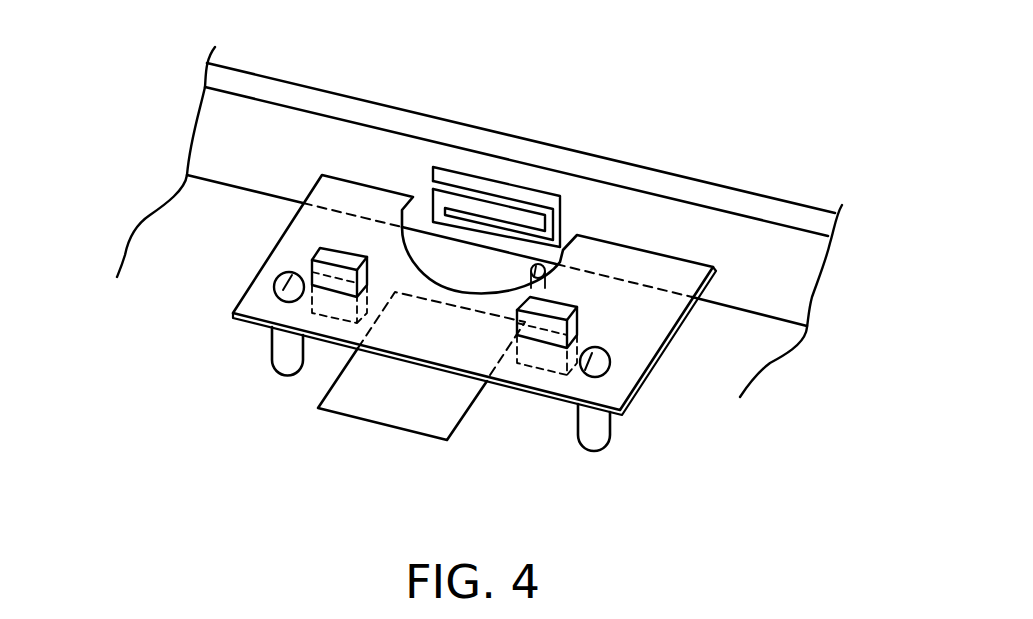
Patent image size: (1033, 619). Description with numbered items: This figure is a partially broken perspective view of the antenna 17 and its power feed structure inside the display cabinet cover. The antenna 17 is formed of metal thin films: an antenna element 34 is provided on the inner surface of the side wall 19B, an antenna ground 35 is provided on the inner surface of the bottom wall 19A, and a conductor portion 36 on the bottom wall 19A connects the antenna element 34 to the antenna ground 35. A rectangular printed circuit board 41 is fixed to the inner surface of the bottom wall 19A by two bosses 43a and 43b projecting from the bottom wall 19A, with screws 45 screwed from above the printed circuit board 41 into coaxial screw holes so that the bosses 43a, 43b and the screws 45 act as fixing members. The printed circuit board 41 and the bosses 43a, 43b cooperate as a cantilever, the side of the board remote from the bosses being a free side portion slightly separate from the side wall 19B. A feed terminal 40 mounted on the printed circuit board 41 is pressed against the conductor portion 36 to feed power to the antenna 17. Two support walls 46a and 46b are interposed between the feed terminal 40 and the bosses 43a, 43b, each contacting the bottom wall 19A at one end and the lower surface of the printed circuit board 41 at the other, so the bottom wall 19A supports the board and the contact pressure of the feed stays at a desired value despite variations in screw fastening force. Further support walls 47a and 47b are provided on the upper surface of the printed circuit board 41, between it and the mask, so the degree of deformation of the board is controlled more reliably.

The antenna 17 is at (412, 155).
The bottom wall 19A is at (142, 240).
The side wall 19B is at (752, 190).
The antenna element 34 is at (513, 186).
The antenna ground 35 is at (388, 418).
The conductor portion 36 is at (518, 270).
The feed terminal 40 is at (507, 313).
The printed circuit board 41 is at (276, 247).
The boss 43a is at (272, 350).
The boss 43b is at (604, 434).
The screw 45 is at (276, 283).
The support wall 46a is at (318, 335).
The support wall 46b is at (535, 362).
The support wall 47a is at (330, 250).
The support wall 47b is at (578, 306).